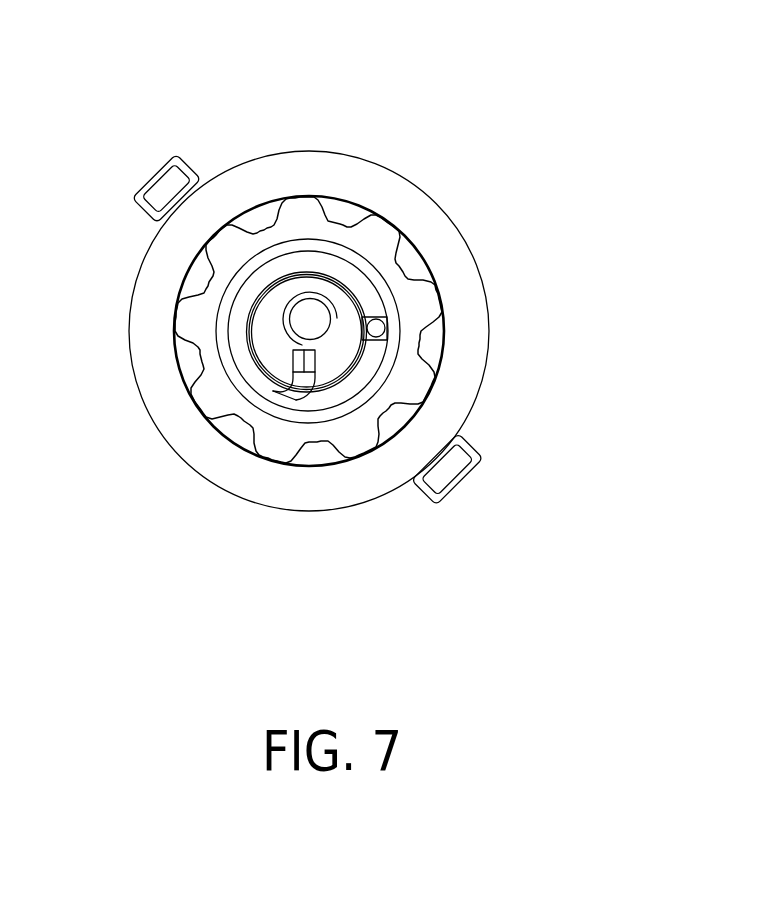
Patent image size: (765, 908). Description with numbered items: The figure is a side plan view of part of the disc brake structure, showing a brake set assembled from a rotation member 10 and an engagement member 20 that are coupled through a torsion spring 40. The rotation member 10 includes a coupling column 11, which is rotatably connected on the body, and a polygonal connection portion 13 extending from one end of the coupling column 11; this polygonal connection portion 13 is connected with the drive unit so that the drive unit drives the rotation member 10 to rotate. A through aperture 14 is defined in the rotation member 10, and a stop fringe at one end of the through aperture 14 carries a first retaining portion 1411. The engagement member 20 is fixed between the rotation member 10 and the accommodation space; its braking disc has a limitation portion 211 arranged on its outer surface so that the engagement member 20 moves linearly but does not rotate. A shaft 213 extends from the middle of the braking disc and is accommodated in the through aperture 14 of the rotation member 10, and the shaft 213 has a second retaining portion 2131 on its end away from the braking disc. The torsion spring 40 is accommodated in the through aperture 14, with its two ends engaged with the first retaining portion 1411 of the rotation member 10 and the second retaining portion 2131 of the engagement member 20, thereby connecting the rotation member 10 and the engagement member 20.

The engagement member 20 is at (333, 305).
The limitation portion 211 is at (457, 468).
The shaft 213 is at (178, 243).
The second retaining portion 2131 is at (293, 361).
The rotation member 10 is at (380, 300).
The coupling column 11 is at (443, 313).
The polygonal connection portion 13 is at (340, 222).
The through aperture 14 is at (404, 291).
The first retaining portion 1411 is at (388, 340).
The torsion spring 40 is at (240, 307).